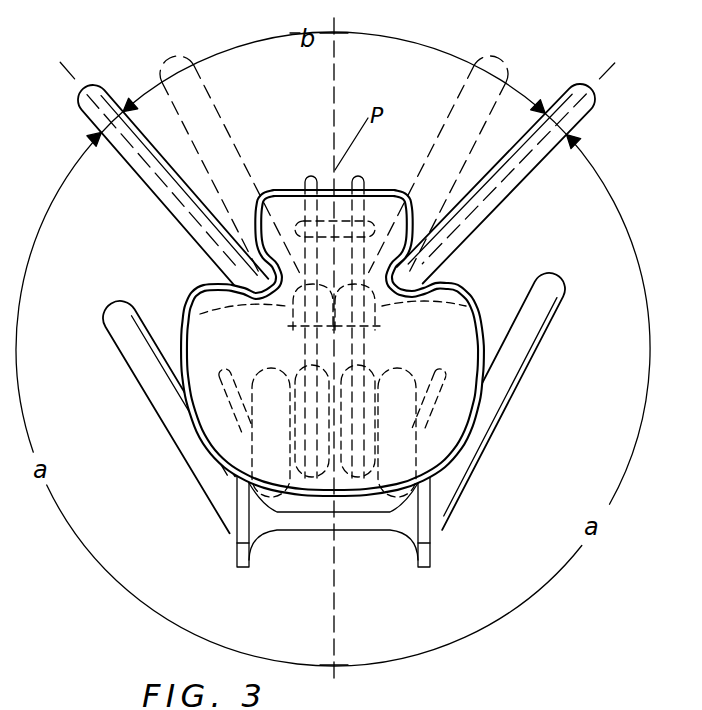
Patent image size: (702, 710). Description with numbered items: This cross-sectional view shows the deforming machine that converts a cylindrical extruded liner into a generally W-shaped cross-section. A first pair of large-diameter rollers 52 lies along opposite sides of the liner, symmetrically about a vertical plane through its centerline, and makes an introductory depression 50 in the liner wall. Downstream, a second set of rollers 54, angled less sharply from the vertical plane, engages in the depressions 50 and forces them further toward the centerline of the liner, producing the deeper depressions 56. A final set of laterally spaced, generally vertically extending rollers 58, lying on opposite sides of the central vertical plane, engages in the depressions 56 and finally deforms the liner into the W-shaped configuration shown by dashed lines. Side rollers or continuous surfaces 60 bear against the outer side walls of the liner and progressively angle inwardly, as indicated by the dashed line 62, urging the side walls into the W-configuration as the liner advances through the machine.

The introductory depression 50 is at (210, 289).
The rollers 52 is at (82, 116).
The second set of rollers 54 is at (168, 56).
The depressions 56 is at (312, 338).
The rollers 58 is at (378, 348).
The side rollers or surfaces 60 is at (110, 340).
The dashed line 62 is at (228, 432).